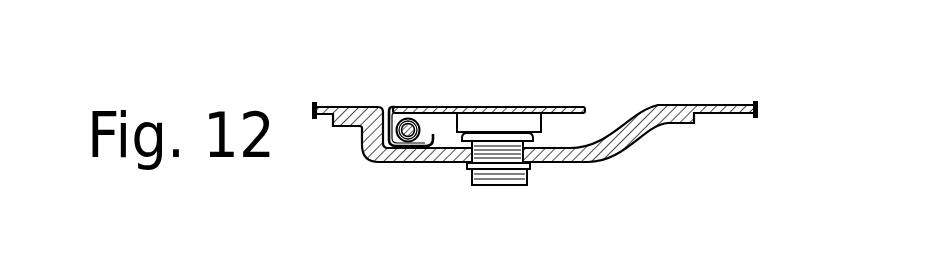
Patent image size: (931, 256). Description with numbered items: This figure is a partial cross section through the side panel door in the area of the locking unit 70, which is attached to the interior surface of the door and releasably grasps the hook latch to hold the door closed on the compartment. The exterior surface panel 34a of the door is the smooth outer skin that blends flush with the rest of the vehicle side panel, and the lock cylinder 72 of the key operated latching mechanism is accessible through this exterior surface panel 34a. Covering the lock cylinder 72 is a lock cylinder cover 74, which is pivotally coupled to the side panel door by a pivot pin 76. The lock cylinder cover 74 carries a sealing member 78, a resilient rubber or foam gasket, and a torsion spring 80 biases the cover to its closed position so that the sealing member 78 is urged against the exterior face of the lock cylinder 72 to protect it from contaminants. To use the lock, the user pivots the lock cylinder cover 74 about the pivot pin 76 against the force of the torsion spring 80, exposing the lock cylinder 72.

The locking unit 70 is at (609, 78).
The lock cylinder 72 is at (495, 185).
The lock cylinder cover 74 is at (450, 107).
The pivot pin 76 is at (425, 163).
The sealing member 78 is at (511, 122).
The torsion spring 80 is at (395, 107).
The exterior surface panel 34a is at (731, 105).